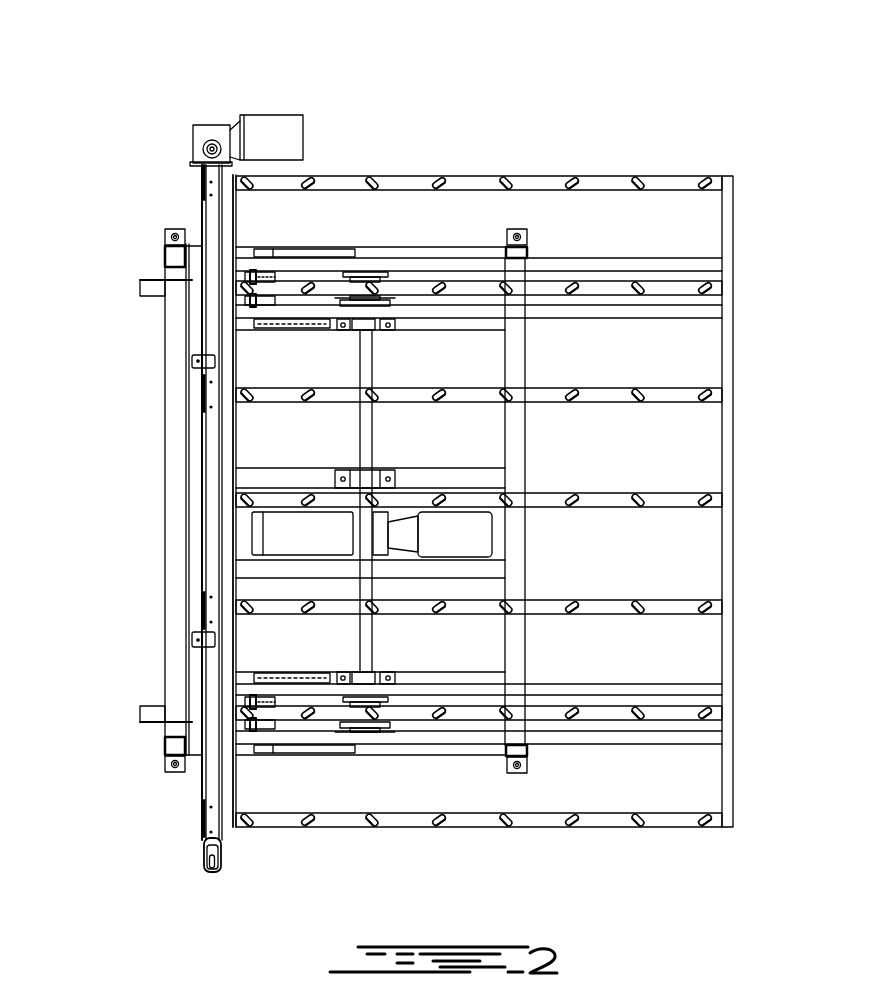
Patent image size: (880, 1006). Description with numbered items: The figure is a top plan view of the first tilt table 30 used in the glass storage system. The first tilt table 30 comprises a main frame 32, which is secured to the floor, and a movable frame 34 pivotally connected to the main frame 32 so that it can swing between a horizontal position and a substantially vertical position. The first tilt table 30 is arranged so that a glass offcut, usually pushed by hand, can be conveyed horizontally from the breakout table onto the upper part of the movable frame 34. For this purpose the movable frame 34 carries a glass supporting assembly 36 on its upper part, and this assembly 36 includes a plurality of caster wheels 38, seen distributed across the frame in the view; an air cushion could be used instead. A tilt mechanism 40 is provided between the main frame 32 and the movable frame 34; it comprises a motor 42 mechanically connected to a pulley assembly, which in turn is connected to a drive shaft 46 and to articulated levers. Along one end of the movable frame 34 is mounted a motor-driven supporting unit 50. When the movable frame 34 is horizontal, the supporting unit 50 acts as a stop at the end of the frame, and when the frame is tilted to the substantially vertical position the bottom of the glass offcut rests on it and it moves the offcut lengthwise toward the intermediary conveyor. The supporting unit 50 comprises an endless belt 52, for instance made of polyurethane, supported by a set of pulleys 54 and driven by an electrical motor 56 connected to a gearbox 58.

The first tilt table 30 is at (127, 275).
The main frame 32 is at (178, 648).
The movable frame 34 is at (662, 820).
The glass supporting assembly 36 is at (742, 395).
The caster wheels 38 is at (708, 608).
The tilt mechanism 40 is at (540, 483).
The motor 42 is at (478, 540).
The drive shaft 46 is at (370, 431).
The motor-driven supporting unit 50 is at (211, 878).
The endless belt 52 is at (200, 822).
The pulleys 54 is at (204, 147).
The electrical motor 56 is at (292, 122).
The gearbox 58 is at (210, 128).